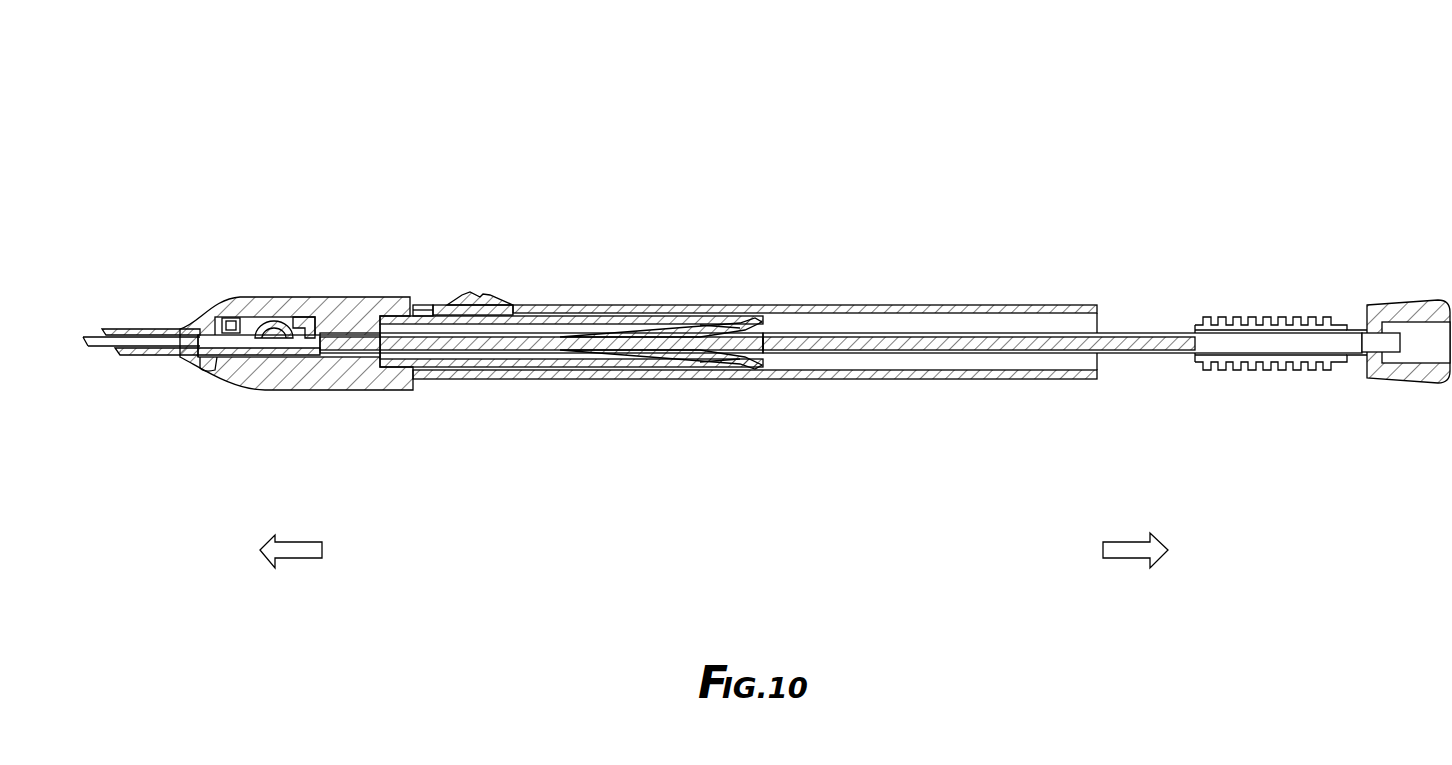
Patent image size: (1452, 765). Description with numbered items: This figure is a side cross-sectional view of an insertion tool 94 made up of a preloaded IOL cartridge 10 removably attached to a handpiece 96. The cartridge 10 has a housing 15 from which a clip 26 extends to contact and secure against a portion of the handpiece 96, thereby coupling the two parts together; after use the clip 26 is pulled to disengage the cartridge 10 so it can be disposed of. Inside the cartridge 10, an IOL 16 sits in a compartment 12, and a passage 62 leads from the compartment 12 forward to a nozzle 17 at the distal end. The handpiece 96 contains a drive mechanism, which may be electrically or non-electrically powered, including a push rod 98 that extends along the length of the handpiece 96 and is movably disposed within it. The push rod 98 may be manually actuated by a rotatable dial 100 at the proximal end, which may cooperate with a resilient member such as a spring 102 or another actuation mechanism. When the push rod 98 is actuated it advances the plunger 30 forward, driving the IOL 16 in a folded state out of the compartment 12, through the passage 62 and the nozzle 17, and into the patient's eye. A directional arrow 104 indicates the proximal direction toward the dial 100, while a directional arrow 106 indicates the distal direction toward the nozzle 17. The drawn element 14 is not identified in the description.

The IOL cartridge 10 is at (423, 319).
The compartment 12 is at (243, 345).
The outer cannula 14 is at (651, 368).
The housing 15 is at (424, 304).
The IOL 16 is at (281, 345).
The nozzle 17 is at (141, 282).
The clip 26 is at (485, 294).
The plunger 30 is at (512, 343).
The passage 62 is at (175, 358).
The insertion tool 94 is at (931, 214).
The handpiece 96 is at (889, 302).
The push rod 98 is at (985, 340).
The rotatable dial 100 is at (1397, 291).
The spring 102 is at (1263, 311).
The directional arrow 104 is at (1130, 558).
The directional arrow 106 is at (300, 558).